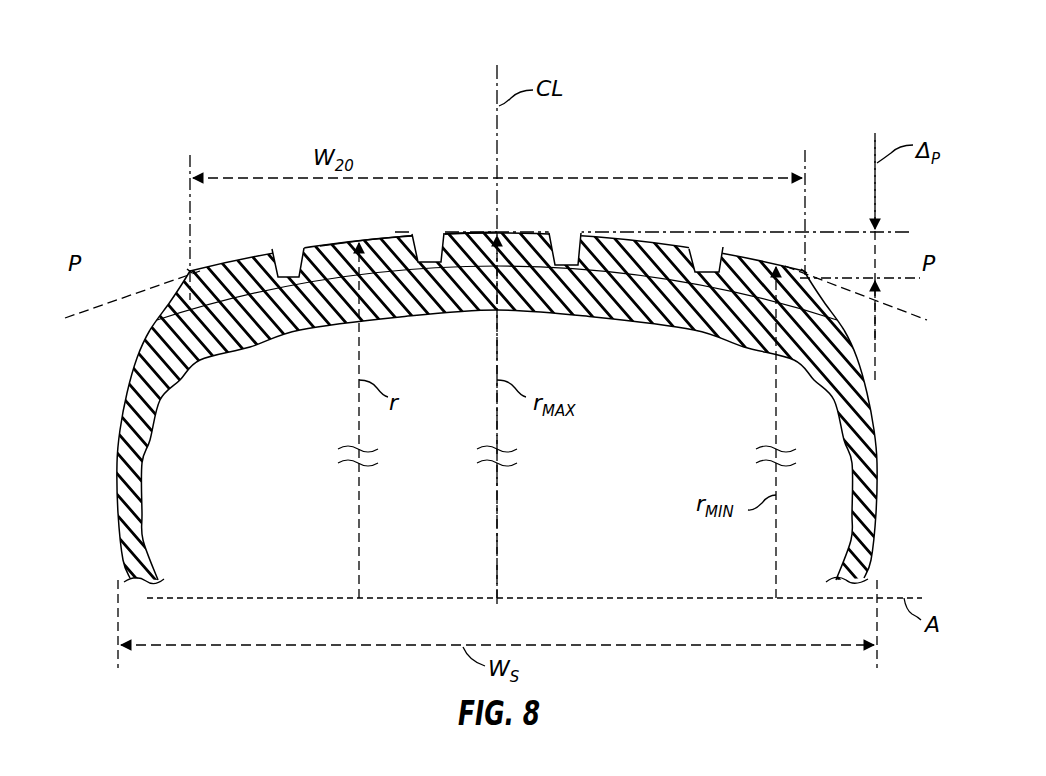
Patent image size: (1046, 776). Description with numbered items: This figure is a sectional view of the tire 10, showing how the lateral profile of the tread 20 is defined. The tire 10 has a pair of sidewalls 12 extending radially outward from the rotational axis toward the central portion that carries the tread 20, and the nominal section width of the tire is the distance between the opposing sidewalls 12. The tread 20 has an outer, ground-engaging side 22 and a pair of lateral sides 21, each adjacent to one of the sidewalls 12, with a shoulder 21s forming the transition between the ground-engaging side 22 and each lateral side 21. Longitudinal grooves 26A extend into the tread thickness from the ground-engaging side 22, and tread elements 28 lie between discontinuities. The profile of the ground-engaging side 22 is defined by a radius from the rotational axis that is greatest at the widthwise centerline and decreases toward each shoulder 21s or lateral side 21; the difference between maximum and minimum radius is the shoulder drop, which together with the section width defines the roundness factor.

The tire 10 is at (146, 104).
The sidewall 12 is at (117, 479).
The tread 20 is at (239, 263).
The lateral side 21 is at (172, 300).
The shoulder 21s is at (188, 273).
The outer, ground-engaging side 22 is at (402, 232).
The longitudinal groove 26A is at (580, 237).
The tread element 28 is at (618, 246).